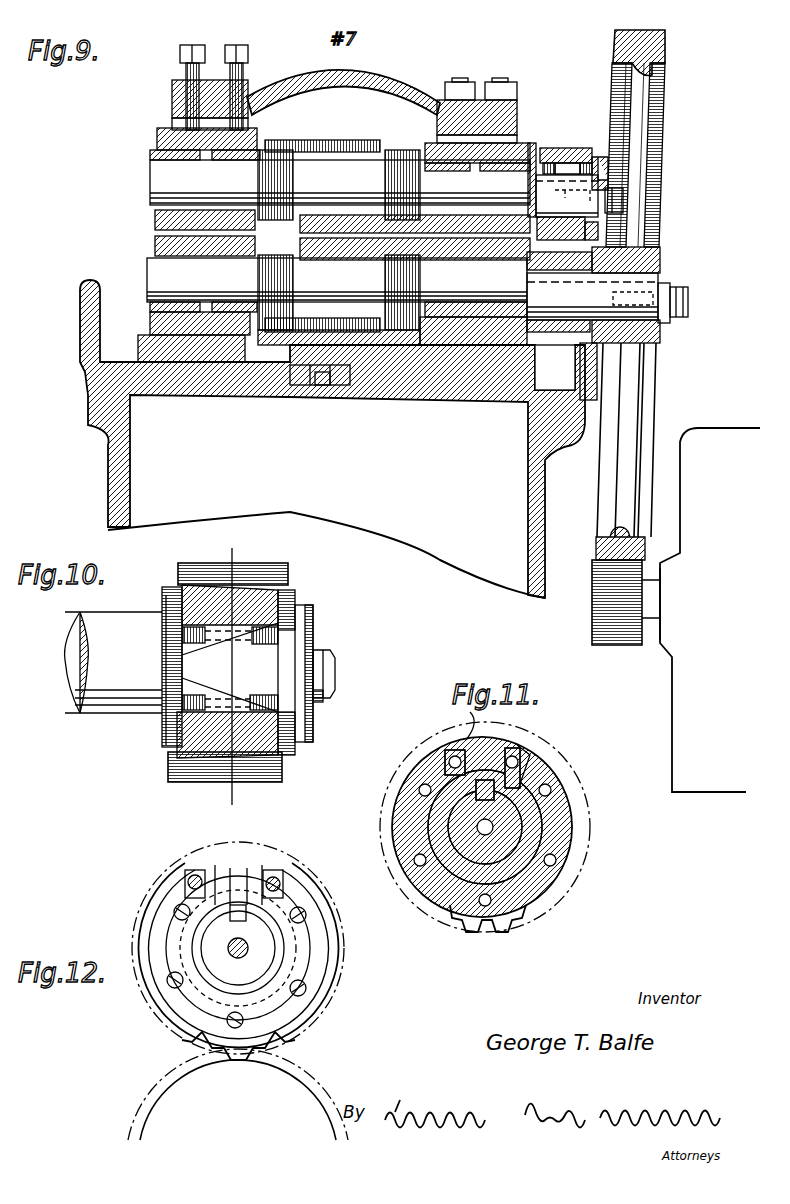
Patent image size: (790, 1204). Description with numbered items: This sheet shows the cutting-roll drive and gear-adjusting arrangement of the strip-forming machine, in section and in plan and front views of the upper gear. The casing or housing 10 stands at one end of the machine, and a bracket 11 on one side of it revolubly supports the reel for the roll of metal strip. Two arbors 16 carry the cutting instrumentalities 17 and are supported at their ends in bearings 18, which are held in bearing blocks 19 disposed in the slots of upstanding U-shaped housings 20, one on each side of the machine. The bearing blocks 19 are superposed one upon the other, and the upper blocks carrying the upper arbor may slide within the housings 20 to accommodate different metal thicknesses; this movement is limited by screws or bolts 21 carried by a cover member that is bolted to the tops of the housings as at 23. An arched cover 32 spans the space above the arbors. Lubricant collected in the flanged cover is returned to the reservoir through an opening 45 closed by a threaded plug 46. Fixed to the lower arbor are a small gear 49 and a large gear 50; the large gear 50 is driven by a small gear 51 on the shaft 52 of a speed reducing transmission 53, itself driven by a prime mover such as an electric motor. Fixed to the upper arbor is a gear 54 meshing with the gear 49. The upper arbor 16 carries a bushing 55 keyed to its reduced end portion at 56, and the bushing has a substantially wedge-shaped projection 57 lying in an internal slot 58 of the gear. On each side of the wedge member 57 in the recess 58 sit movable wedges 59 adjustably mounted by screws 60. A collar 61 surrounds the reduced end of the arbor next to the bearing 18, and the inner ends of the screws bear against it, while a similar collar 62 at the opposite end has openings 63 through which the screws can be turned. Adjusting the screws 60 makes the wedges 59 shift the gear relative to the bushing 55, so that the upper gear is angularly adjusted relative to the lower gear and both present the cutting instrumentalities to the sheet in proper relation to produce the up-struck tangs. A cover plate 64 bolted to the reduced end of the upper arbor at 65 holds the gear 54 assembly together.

In FIG. 9, the casing or housing 10 is at (120, 458).
In FIG. 10, the bracket 11 is at (233, 677).
In FIG. 9, the arbor 16 is at (402, 240).
In FIG. 11, the arbor 16 is at (440, 880).
In FIG. 9, the cutting instrumentalities 17 is at (340, 145).
In FIG. 9, the bearing 18 is at (155, 248).
In FIG. 9, the bearing block 19 is at (157, 138).
In FIG. 9, the U-shaped housing 20 is at (236, 348).
In FIG. 9, the screw or bolt 21 is at (205, 55).
In FIG. 9, the bolting of cover member 23 is at (478, 82).
In FIG. 9, the arched cover 32 is at (405, 70).
In FIG. 9, the opening 45 is at (298, 385).
In FIG. 9, the threaded plug 46 is at (325, 388).
In FIG. 9, the small gear 49 is at (555, 367).
In FIG. 12, the small gear 49 is at (150, 1080).
In FIG. 9, the large gear 50 is at (656, 370).
In FIG. 9, the small gear 51 is at (593, 582).
In FIG. 9, the shaft 52 is at (652, 612).
In FIG. 9, the speed reducing transmission 53 is at (680, 520).
In FIG. 9, the gear 54 is at (560, 150).
In FIG. 10, the gear 54 is at (190, 765).
In FIG. 11, the gear 54 is at (575, 882).
In FIG. 12, the gear 54 is at (312, 1028).
In FIG. 9, the bushing 55 is at (585, 185).
In FIG. 11, the bushing 55 is at (530, 820).
In FIG. 12, the bushing 55 is at (278, 940).
In FIG. 9, the key 56 is at (568, 172).
In FIG. 11, the key 56 is at (476, 786).
In FIG. 12, the key 56 is at (232, 914).
In FIG. 10, the wedge-shaped projection 57 is at (268, 668).
In FIG. 11, the wedge-shaped projection 57 is at (506, 752).
In FIG. 10, the internal slot 58 is at (172, 690).
In FIG. 11, the internal slot 58 is at (457, 719).
In FIG. 10, the movable wedge 59 is at (287, 598).
In FIG. 11, the movable wedge 59 is at (528, 752).
In FIG. 10, the screw 60 is at (183, 634).
In FIG. 11, the screw 60 is at (452, 758).
In FIG. 12, the screw 60 is at (195, 880).
In FIG. 9, the collar 61 is at (532, 143).
In FIG. 10, the collar 61 is at (164, 651).
In FIG. 9, the collar 62 is at (598, 230).
In FIG. 10, the collar 62 is at (308, 712).
In FIG. 12, the collar 62 is at (185, 990).
In FIG. 10, the opening 63 is at (298, 640).
In FIG. 12, the opening 63 is at (250, 870).
In FIG. 9, the cover plate 64 is at (608, 172).
In FIG. 9, the bolt 65 is at (623, 200).
In FIG. 10, the bolt 65 is at (322, 675).